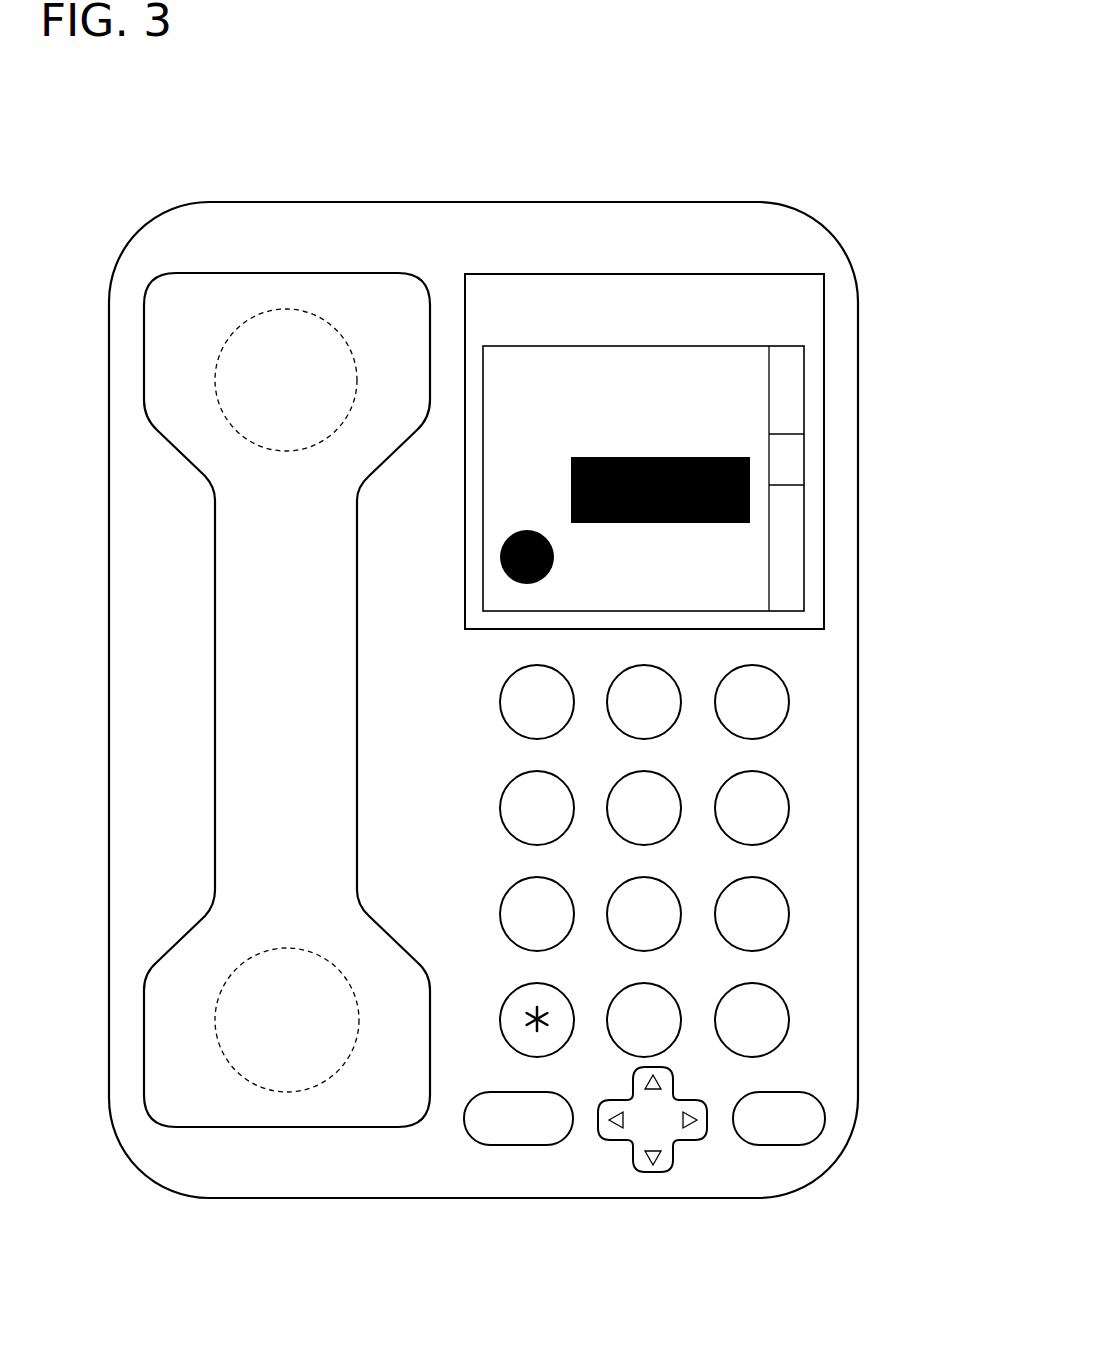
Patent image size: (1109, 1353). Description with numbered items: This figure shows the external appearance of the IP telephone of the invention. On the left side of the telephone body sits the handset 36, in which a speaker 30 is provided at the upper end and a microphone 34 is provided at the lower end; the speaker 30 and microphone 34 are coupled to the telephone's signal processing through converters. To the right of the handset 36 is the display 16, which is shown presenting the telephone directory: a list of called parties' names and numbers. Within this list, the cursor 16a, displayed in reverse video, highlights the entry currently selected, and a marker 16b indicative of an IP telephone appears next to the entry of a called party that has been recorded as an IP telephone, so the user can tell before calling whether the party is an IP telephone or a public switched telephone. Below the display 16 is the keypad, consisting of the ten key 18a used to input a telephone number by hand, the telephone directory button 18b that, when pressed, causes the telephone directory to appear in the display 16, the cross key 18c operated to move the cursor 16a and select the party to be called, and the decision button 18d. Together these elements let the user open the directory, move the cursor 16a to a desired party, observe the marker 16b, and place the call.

The display 16 is at (803, 284).
The cursor 16a is at (750, 510).
The marker 16b is at (500, 557).
The ten key 18a is at (800, 858).
The telephone directory button 18b is at (518, 1145).
The cross key 18c is at (650, 1147).
The decision button 18d is at (775, 1145).
The speaker 30 is at (286, 343).
The microphone 34 is at (287, 1055).
The handset 36 is at (215, 696).